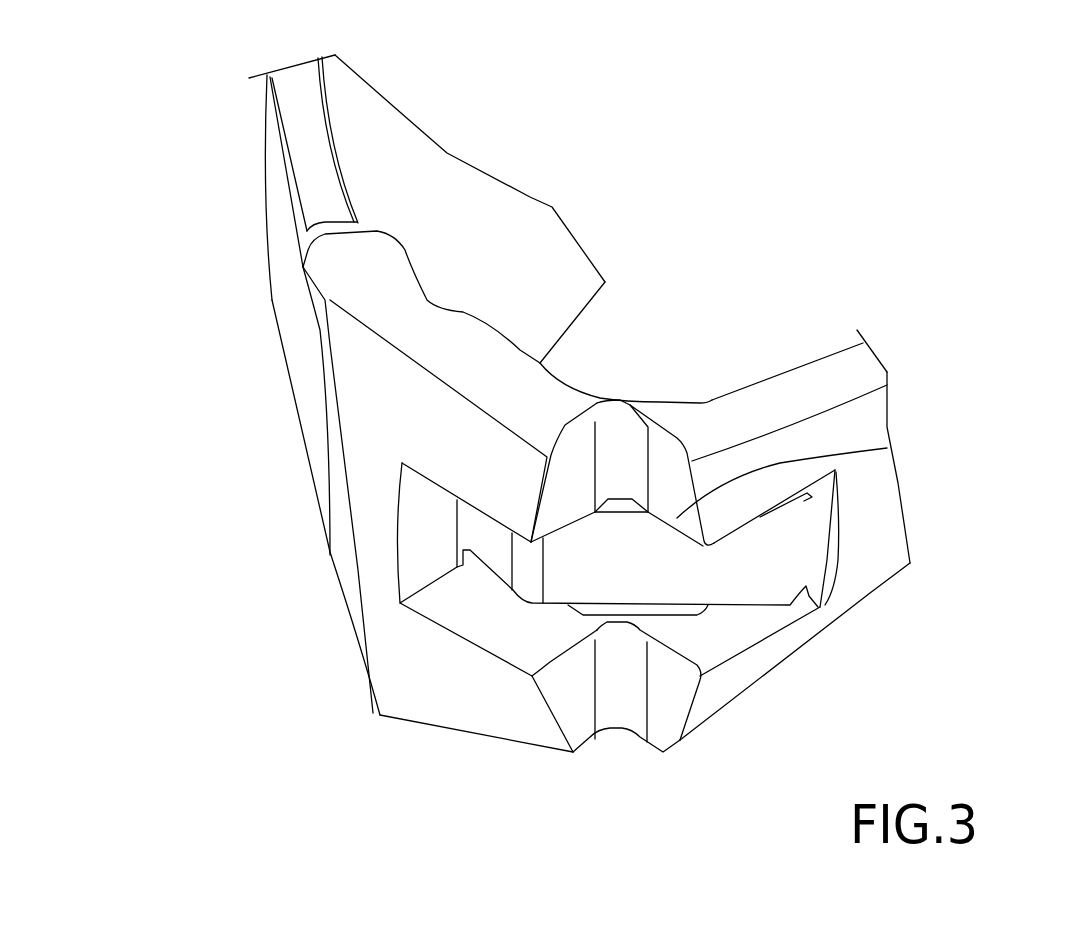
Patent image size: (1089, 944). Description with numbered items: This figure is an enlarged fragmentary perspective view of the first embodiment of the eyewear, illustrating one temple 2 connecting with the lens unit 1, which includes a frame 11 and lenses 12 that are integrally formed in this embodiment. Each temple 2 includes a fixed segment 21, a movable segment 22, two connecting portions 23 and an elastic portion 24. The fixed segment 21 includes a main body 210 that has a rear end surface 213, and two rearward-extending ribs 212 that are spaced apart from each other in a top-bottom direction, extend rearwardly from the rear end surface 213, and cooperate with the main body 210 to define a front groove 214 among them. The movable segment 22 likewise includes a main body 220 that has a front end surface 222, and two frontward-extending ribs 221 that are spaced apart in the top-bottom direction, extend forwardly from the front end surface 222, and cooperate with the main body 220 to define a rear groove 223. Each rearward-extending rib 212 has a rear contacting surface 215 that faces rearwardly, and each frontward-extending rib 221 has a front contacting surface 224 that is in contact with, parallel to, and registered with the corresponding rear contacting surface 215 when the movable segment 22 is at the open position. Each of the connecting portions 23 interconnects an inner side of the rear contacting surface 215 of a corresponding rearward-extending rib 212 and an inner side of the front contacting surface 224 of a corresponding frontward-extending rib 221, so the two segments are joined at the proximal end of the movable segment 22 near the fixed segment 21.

The lens unit 1 is at (254, 246).
The frame 11 is at (327, 168).
The lens 12 is at (500, 217).
The temple 2 is at (848, 620).
The fixed segment 21 is at (436, 731).
The main body 210 is at (383, 500).
The rearward-extending rib 212 is at (477, 435).
The rear end surface 213 is at (413, 515).
The front groove 214 is at (450, 605).
The rear contacting surface 215 is at (575, 455).
The movable segment 22 is at (812, 355).
The main body 220 is at (875, 500).
The frontward-extending rib 221 is at (746, 423).
The front end surface 222 is at (832, 535).
The rear groove 223 is at (710, 647).
The front contacting surface 224 is at (887, 448).
The connecting portion 23 is at (615, 440).
The elastic portion 24 is at (632, 545).